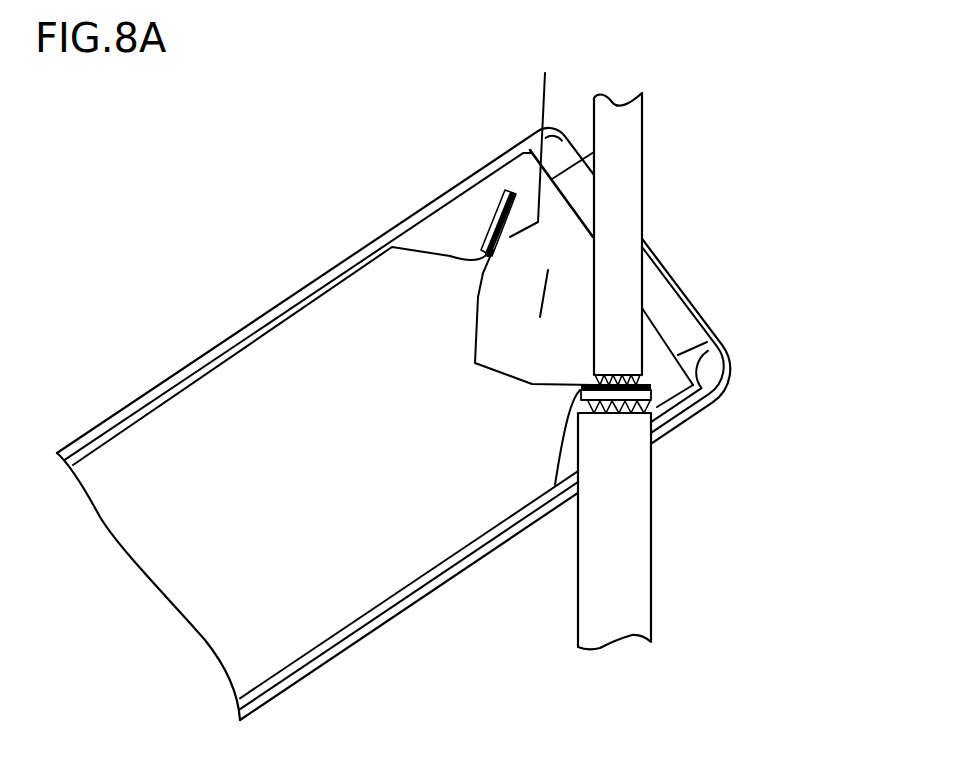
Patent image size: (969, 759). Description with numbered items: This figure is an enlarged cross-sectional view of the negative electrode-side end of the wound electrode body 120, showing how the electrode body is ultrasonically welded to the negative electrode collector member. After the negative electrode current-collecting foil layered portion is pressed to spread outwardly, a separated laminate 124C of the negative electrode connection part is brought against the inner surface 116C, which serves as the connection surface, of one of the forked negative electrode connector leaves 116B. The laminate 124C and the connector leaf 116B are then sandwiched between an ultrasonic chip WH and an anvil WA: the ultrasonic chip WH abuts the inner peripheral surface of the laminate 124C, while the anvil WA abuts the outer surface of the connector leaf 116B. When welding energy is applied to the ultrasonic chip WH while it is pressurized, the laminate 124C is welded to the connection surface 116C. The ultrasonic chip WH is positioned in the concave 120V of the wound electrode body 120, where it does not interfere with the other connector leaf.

The wound electrode body 120 is at (282, 352).
The concave 120V is at (540, 317).
The negative electrode collector connection leaf 116B is at (503, 208).
The inner surface 116C is at (647, 397).
The laminate 124C is at (638, 385).
The ultrasonic chip WH is at (627, 175).
The anvil WA is at (643, 553).